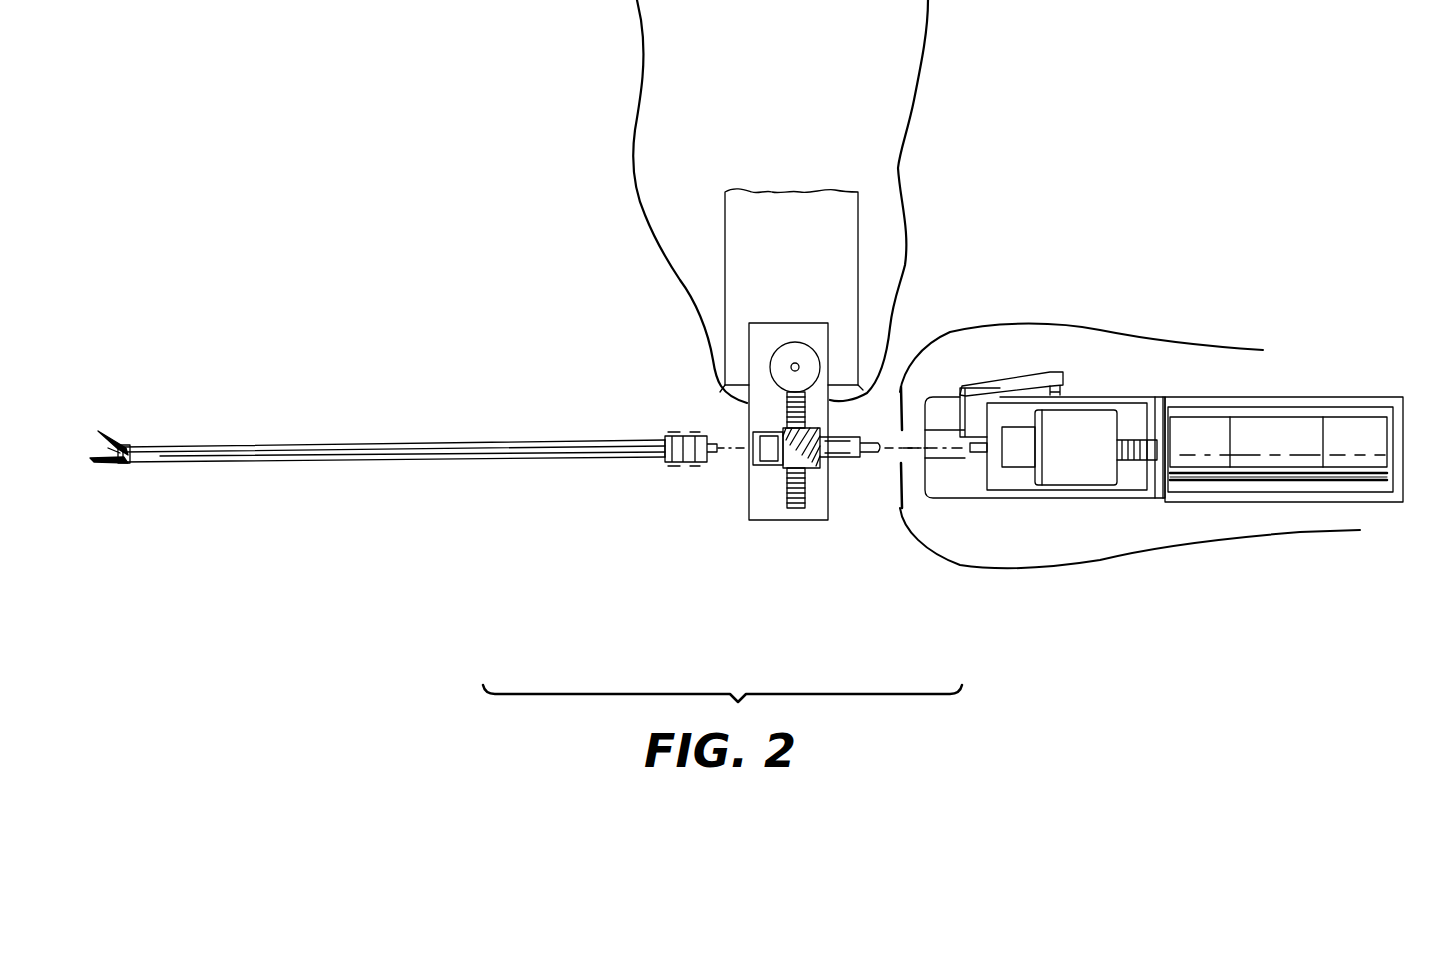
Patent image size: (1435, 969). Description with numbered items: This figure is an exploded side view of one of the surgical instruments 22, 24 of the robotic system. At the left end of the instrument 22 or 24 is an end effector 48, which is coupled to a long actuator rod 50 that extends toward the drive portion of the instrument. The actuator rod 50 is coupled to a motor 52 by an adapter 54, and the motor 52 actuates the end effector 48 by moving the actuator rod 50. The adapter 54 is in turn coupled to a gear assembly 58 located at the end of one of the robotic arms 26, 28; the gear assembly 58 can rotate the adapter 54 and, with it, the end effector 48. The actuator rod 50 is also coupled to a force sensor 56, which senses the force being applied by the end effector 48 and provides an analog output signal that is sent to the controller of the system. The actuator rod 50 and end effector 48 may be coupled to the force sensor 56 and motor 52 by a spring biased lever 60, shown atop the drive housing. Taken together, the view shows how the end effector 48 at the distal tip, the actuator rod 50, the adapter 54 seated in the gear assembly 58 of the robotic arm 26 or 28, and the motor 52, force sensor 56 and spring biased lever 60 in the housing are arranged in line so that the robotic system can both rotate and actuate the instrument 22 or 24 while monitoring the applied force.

The surgical instrument 22 is at (1072, 340).
The surgical instrument 24 is at (1030, 260).
The robotic arm 26 is at (791, 232).
The robotic arm 28 is at (757, 216).
The end effector 48 is at (102, 463).
The actuator rod 50 is at (337, 452).
The motor 52 is at (1190, 449).
The adapter 54 is at (768, 463).
The force sensor 56 is at (1085, 423).
The gear assembly 58 is at (810, 354).
The spring biased lever 60 is at (1053, 370).